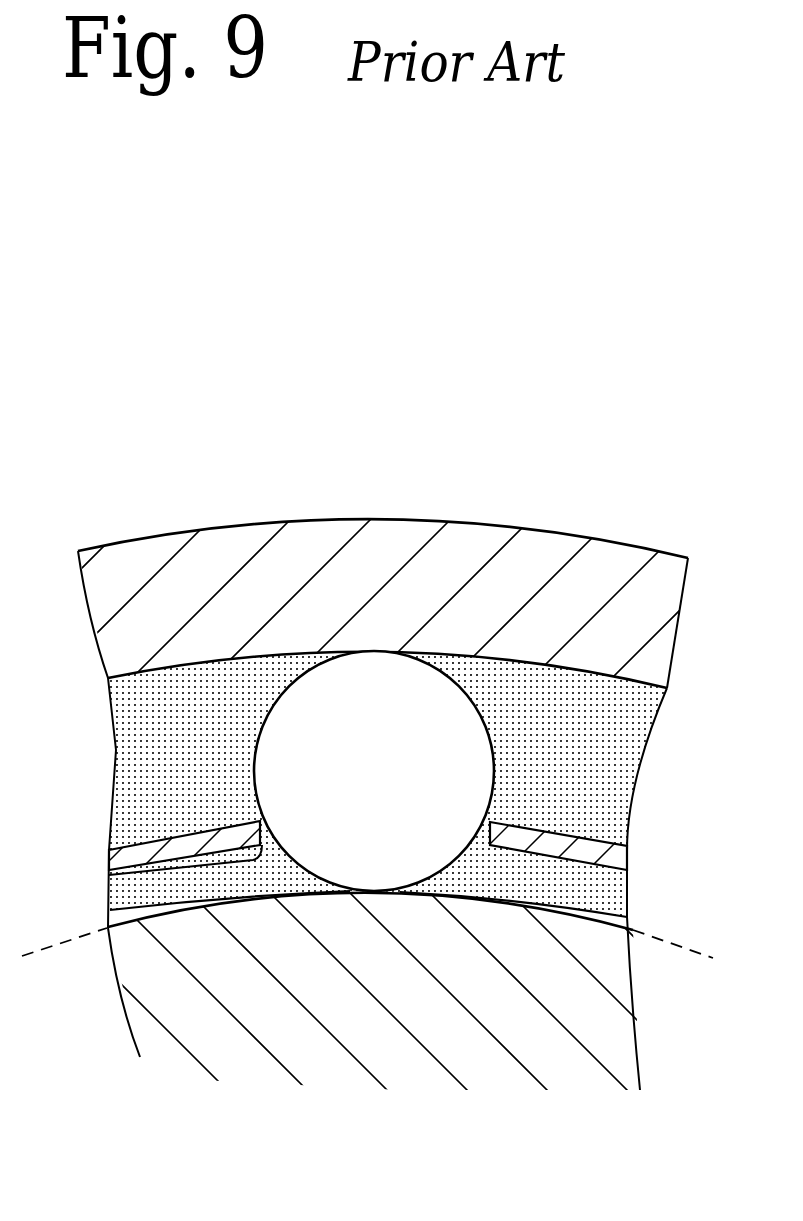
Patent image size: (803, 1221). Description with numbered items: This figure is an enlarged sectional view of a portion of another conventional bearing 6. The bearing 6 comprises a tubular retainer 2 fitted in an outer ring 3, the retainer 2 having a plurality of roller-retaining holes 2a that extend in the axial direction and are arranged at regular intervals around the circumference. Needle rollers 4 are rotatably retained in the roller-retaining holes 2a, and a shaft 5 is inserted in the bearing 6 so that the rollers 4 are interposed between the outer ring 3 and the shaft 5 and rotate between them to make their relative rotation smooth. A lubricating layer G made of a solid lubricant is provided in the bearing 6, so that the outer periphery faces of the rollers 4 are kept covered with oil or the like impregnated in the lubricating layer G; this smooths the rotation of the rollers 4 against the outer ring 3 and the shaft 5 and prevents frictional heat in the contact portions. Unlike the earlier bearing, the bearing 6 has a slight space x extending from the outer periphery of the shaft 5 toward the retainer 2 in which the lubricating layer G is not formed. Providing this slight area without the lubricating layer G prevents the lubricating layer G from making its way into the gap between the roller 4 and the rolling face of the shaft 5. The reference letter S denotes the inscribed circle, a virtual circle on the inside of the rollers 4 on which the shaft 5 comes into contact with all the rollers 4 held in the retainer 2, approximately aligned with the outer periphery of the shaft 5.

The retainer 2 is at (597, 843).
The roller-retaining holes 2a is at (110, 882).
The outer ring 3 is at (216, 556).
The needle rollers 4 is at (373, 683).
The shaft 5 is at (267, 1027).
The bearing 6 is at (401, 802).
The lubricating layer G is at (188, 690).
The slight space x is at (110, 908).
The inscribed circle S is at (42, 950).